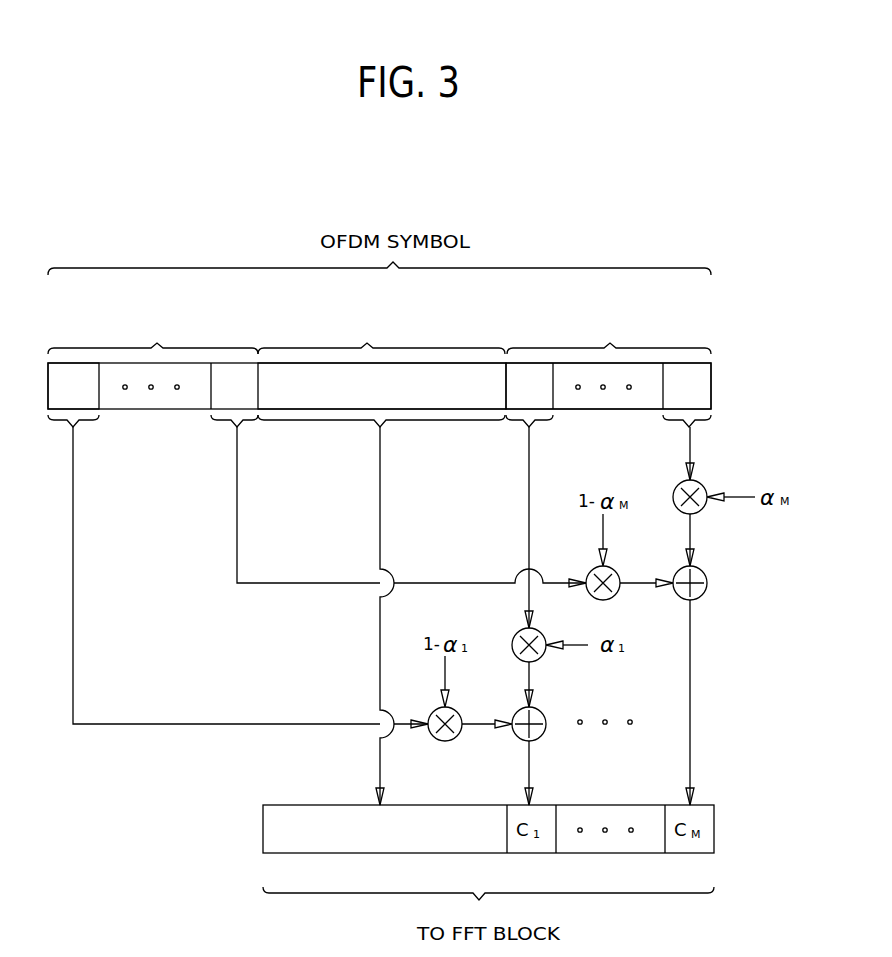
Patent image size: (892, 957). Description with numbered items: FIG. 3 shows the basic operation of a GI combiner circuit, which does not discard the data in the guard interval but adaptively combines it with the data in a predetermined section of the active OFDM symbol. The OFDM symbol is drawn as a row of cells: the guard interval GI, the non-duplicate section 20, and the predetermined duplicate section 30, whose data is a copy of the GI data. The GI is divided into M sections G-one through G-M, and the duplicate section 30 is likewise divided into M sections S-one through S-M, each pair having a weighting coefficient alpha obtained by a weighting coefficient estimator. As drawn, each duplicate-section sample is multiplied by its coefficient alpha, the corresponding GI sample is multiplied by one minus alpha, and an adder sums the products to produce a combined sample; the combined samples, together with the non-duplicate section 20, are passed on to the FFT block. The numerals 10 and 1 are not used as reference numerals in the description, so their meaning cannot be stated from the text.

The OFDM symbol 10 is at (379, 335).
The first guard interval sample G1 1 is at (73, 386).
The non-duplicate section 20 is at (367, 347).
The duplicate section 30 is at (610, 347).